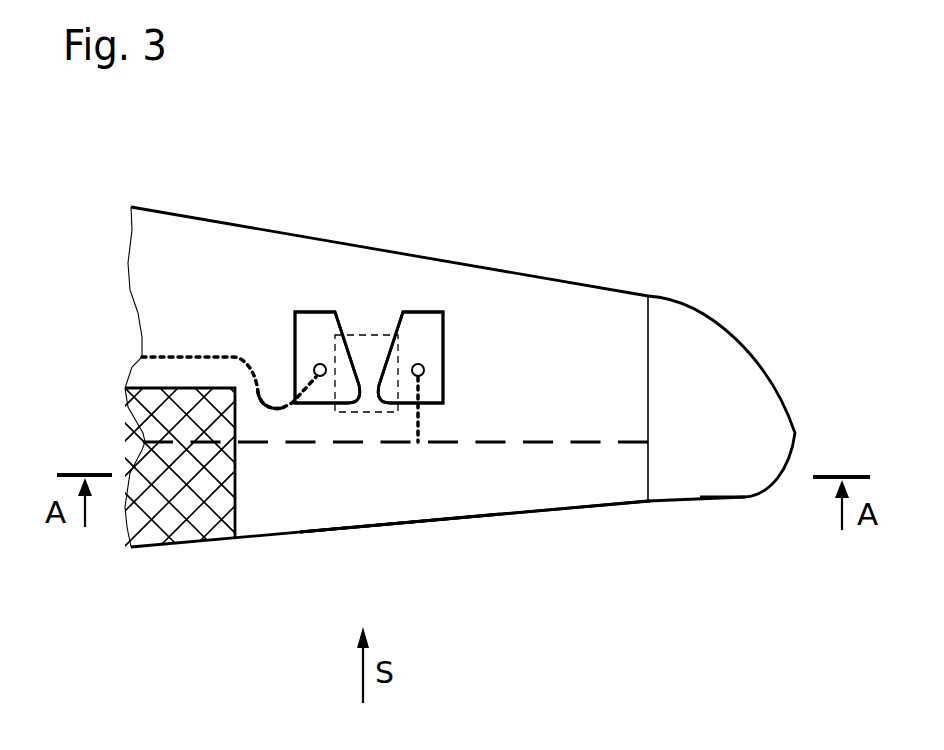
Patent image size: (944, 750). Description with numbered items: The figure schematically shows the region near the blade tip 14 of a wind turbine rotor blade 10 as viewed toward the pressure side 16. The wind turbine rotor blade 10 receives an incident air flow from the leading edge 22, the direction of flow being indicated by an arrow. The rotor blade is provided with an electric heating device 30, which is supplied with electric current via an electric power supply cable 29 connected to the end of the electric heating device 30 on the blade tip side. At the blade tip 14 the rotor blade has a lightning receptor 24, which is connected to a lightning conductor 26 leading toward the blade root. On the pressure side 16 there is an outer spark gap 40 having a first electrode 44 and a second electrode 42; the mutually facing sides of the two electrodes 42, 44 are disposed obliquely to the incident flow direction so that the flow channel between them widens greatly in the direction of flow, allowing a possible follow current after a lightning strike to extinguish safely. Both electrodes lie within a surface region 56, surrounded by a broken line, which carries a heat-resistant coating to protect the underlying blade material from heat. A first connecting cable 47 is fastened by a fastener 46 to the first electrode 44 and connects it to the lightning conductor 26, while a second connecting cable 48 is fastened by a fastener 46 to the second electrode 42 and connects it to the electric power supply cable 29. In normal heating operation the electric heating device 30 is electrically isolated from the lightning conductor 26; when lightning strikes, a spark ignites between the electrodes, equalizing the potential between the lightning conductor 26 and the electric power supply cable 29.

The wind turbine rotor blade 10 is at (607, 545).
The blade tip 14 is at (710, 500).
The pressure side 16 is at (582, 325).
The leading edge 22 is at (420, 523).
The lightning receptor 24 is at (705, 365).
The lightning conductor 26 is at (488, 445).
The electric power supply cable 29 is at (190, 357).
The electric heating device 30 is at (163, 508).
The outer spark gap 40 is at (373, 287).
The second electrode 42 is at (325, 333).
The first electrode 44 is at (425, 330).
The fastener 46 is at (316, 363).
The first connecting cable 47 is at (417, 425).
The second connecting cable 48 is at (275, 407).
The surface region 56 is at (360, 333).